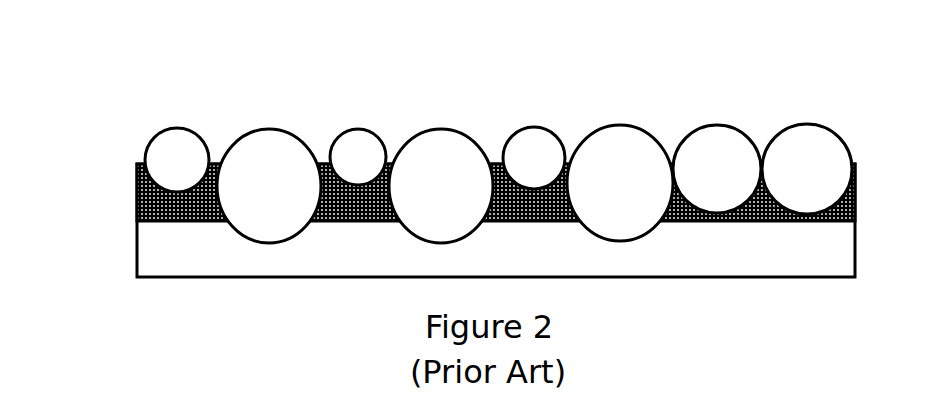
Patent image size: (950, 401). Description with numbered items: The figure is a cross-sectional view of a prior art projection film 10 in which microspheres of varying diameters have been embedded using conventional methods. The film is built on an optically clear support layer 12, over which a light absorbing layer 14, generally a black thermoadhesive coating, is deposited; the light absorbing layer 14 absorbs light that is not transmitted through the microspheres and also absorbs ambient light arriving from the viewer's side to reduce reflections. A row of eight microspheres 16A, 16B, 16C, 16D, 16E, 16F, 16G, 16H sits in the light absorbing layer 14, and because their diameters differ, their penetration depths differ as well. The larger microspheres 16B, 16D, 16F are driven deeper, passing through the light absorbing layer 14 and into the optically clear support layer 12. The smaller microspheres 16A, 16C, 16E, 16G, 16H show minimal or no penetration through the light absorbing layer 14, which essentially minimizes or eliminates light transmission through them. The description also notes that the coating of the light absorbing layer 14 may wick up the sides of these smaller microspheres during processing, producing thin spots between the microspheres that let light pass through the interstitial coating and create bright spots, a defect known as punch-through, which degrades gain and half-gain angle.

The prior art projection film 10 is at (447, 155).
The optically clear support layer 12 is at (208, 253).
The light absorbing layer 14 is at (140, 200).
The microsphere 16A is at (177, 160).
The microsphere 16B is at (269, 186).
The microsphere 16C is at (358, 158).
The microsphere 16D is at (441, 186).
The microsphere 16E is at (534, 159).
The microsphere 16F is at (620, 183).
The microsphere 16G is at (717, 169).
The microsphere 16H is at (807, 169).